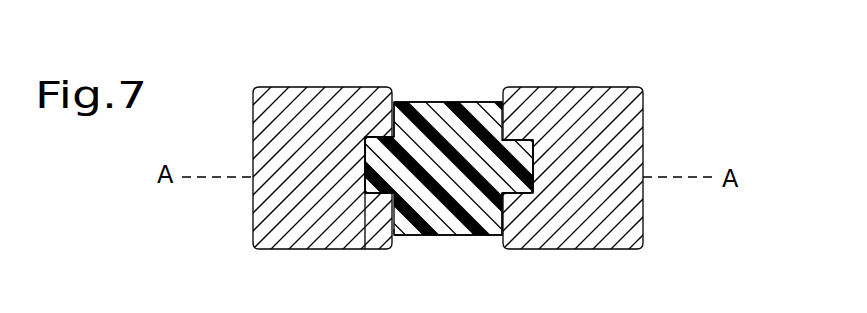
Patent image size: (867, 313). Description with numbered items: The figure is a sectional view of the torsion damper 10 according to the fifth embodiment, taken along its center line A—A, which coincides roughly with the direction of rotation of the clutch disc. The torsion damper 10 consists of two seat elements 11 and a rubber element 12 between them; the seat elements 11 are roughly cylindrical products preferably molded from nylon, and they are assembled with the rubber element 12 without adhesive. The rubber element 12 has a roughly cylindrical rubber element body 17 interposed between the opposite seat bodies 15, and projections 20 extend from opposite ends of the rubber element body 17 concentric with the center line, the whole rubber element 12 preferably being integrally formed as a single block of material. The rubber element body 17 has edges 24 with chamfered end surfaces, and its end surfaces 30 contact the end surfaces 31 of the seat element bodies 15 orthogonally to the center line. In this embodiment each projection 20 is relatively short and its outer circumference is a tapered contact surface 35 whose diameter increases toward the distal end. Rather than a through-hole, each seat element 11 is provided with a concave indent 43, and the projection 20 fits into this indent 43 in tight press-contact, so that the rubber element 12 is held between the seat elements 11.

The torsion damper 10 is at (272, 62).
The seat element 11 is at (252, 84).
The rubber element 12 is at (452, 100).
The seat body 15 is at (270, 230).
The rubber element body 17 is at (428, 236).
The projection 20 is at (535, 157).
The edge 24 is at (502, 102).
The end surface of rubber element body 30 is at (380, 138).
The end surface of seat element body 31 is at (408, 107).
The contact surface 35 is at (390, 137).
The concave indent 43 is at (365, 177).